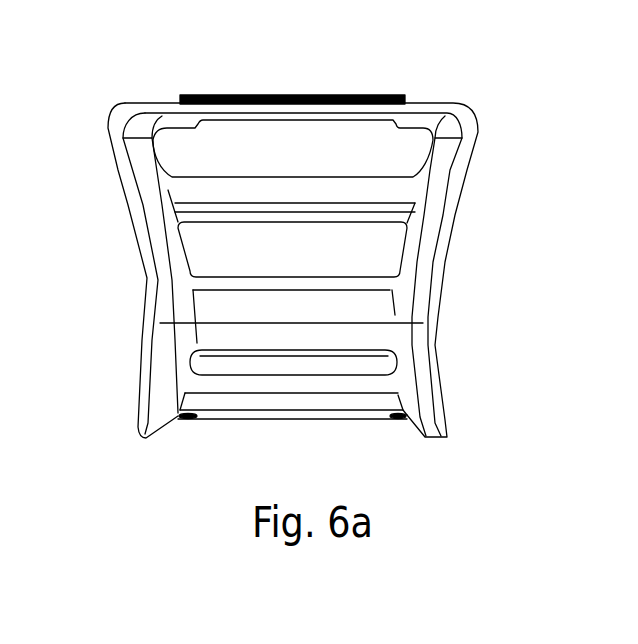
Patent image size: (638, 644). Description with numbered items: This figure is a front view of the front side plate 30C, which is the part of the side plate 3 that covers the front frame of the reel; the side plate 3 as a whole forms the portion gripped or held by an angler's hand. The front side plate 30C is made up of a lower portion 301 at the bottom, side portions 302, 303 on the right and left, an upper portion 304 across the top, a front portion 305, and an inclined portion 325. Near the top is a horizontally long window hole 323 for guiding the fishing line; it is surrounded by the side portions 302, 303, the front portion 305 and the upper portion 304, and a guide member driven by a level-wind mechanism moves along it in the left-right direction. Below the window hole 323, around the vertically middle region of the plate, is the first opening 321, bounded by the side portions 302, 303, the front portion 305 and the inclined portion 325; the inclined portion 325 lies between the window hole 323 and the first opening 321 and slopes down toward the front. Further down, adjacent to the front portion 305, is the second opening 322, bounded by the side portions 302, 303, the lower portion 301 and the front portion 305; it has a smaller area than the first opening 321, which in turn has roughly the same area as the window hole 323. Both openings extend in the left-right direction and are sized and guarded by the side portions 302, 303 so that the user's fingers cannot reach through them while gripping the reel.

The side plate 3 is at (322, 234).
The front side plate 30C is at (462, 101).
The upper portion 304 is at (333, 95).
The window hole 323 is at (354, 127).
The side portion 303 is at (147, 395).
The side portion 302 is at (440, 373).
The inclined portion 325 is at (398, 191).
The first opening 321 is at (398, 242).
The front portion 305 is at (378, 315).
The second opening 322 is at (352, 375).
The lower portion 301 is at (308, 420).